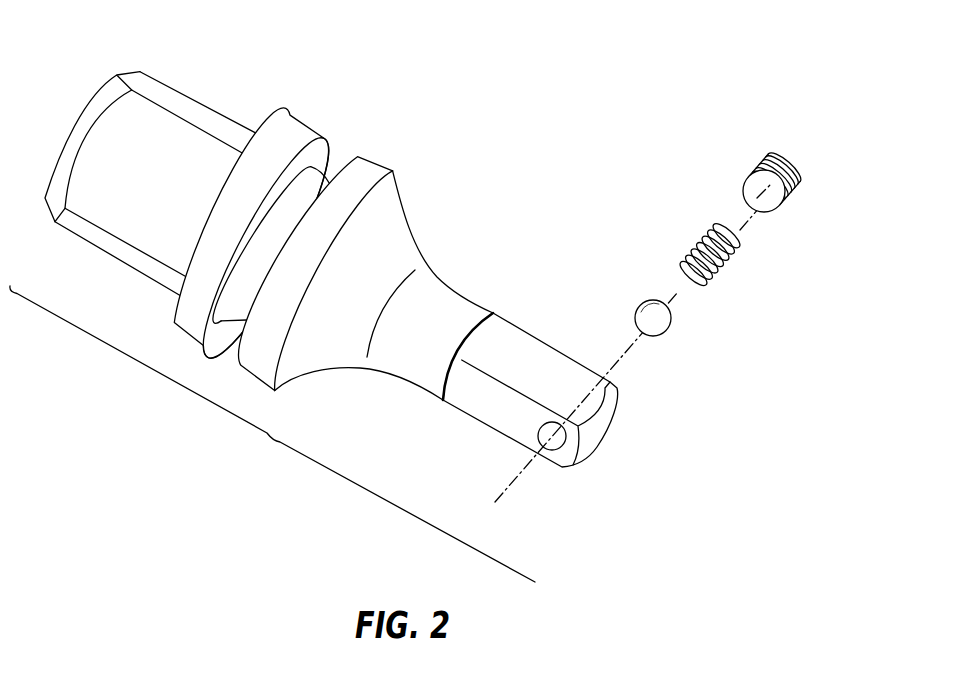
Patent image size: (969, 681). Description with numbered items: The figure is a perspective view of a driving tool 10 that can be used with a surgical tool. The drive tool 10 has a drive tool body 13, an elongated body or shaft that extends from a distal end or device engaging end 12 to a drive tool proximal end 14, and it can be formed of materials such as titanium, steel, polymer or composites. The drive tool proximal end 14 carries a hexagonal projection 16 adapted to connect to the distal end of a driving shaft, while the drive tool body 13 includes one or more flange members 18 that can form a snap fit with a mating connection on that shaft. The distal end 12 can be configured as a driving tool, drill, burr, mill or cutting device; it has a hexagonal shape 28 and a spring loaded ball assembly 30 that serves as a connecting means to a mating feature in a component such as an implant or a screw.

The driving tool 10 is at (606, 47).
The distal end 12 is at (462, 430).
The drive tool body 13 is at (270, 440).
The drive tool proximal end 14 is at (103, 275).
The hexagonal projection 16 is at (203, 104).
The flange members 18 is at (378, 158).
The hexagonal shape 28 is at (541, 338).
The spring loaded ball assembly 30 is at (666, 229).